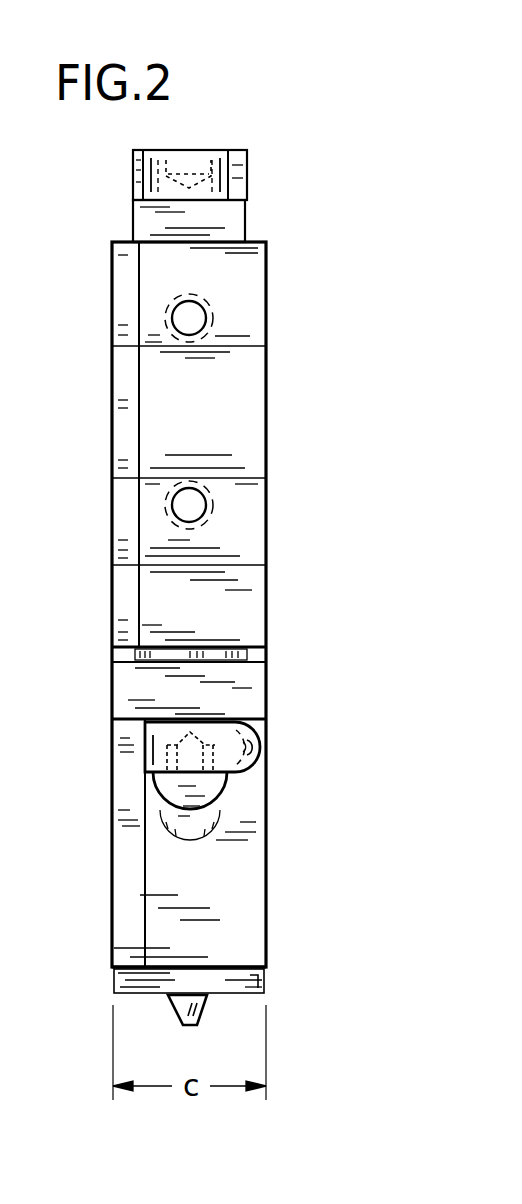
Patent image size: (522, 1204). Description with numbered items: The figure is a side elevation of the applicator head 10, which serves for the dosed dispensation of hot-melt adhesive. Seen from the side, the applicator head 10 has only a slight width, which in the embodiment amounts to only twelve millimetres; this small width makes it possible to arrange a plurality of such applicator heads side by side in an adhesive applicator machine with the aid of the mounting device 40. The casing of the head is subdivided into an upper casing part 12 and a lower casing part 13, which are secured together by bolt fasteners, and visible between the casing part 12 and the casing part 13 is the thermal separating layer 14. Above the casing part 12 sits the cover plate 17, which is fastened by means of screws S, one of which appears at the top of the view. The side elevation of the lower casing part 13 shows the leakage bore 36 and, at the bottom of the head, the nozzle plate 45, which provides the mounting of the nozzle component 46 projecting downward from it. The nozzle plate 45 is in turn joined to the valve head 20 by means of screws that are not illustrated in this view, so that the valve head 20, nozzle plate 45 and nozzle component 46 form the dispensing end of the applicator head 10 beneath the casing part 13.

The applicator head 10 is at (216, 110).
The screws S is at (233, 172).
The cover plate 17 is at (233, 222).
The casing part 12 is at (295, 433).
The mounting device 40 is at (242, 398).
The thermal separating layer 14 is at (240, 656).
The casing part 13 is at (285, 828).
The leakage bore 36 is at (163, 800).
The valve head 20 is at (260, 893).
The nozzle plate 45 is at (258, 981).
The nozzle component 46 is at (190, 1007).